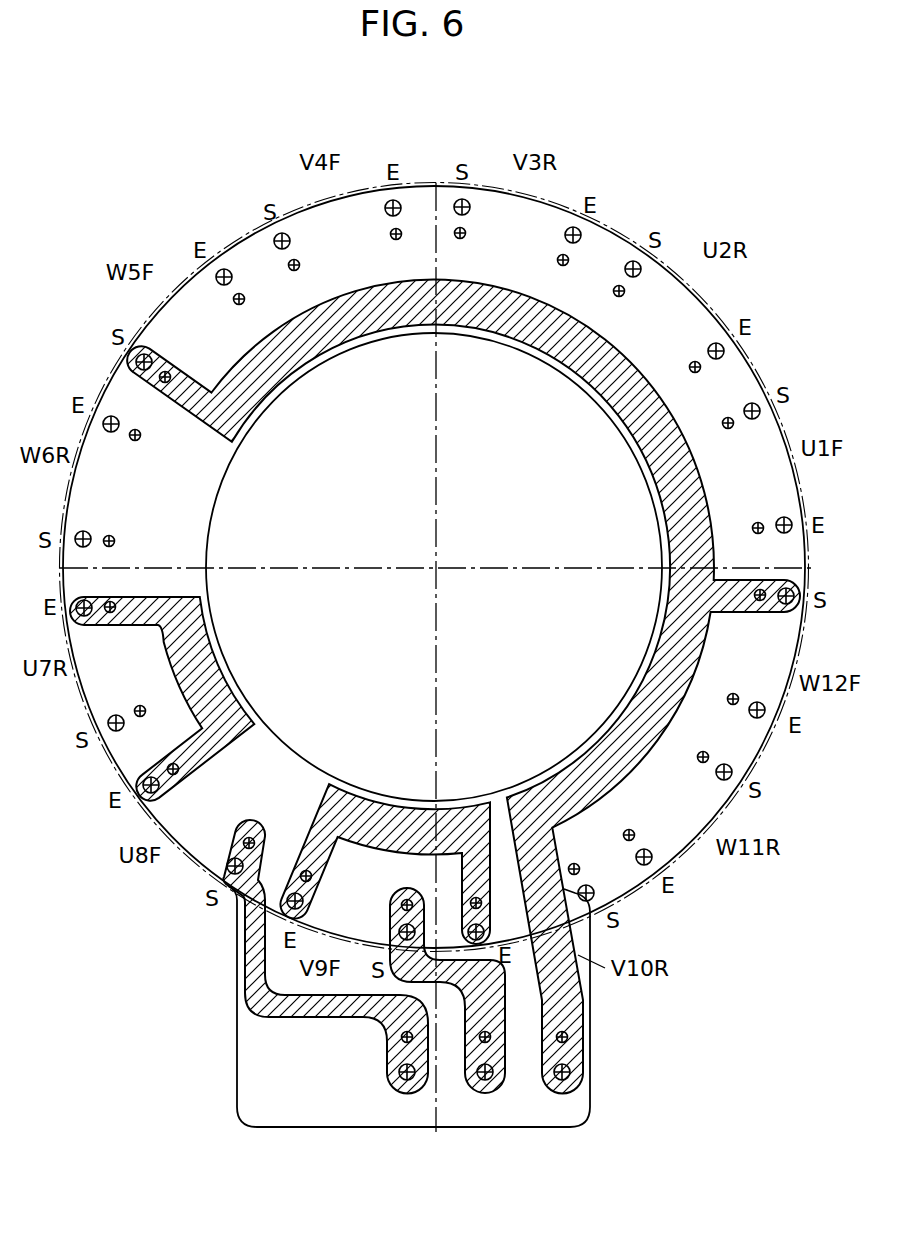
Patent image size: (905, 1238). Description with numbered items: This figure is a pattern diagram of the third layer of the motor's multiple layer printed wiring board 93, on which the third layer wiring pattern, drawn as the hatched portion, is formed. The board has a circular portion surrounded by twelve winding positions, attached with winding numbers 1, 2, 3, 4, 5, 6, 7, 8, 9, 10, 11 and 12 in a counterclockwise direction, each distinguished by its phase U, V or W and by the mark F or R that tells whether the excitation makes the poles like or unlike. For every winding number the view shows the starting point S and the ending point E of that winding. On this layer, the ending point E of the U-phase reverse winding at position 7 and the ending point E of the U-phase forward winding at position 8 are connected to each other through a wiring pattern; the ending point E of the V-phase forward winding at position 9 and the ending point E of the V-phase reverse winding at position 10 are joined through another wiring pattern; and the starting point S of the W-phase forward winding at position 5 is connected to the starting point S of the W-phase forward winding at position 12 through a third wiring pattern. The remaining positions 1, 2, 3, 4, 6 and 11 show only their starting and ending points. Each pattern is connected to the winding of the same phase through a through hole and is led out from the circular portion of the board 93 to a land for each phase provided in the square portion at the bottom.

The rotor 1 is at (758, 468).
The iron core of rotor 2 is at (669, 317).
The magnet 3 is at (517, 232).
The stator 4 is at (338, 235).
The concentrated winding 5 is at (190, 326).
The core piece 6 is at (108, 481).
The insulating plate 7 is at (111, 665).
The terminal pin 8 is at (199, 819).
The winding number 9 is at (351, 906).
The winding number 10 is at (531, 902).
The winding number 11 is at (678, 809).
The winding number 12 is at (761, 653).
The multiple layer printed wiring board (third layer) 93 is at (590, 1108).